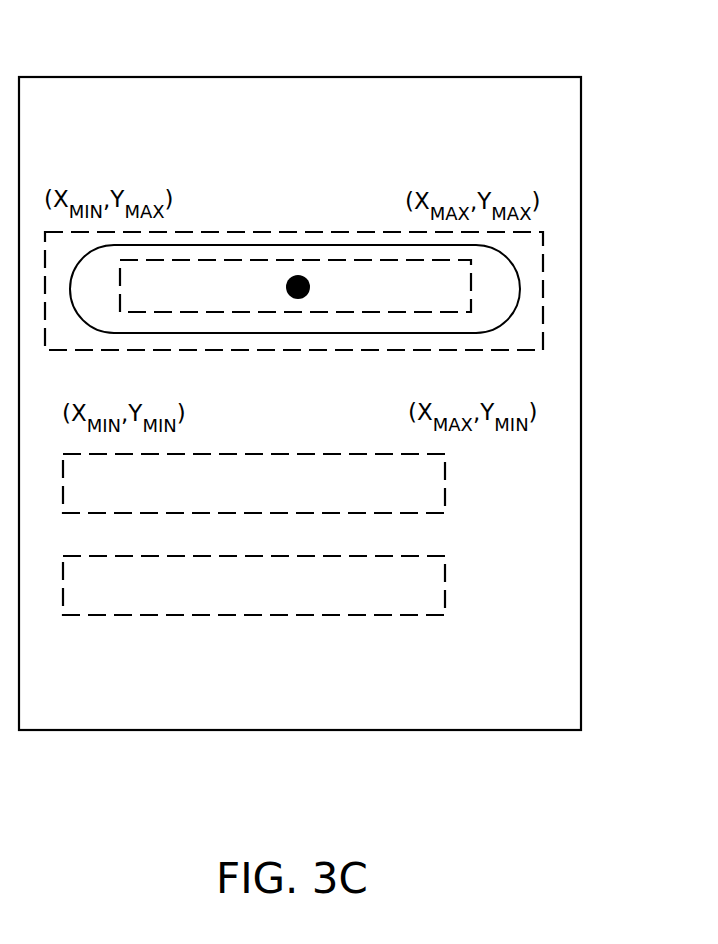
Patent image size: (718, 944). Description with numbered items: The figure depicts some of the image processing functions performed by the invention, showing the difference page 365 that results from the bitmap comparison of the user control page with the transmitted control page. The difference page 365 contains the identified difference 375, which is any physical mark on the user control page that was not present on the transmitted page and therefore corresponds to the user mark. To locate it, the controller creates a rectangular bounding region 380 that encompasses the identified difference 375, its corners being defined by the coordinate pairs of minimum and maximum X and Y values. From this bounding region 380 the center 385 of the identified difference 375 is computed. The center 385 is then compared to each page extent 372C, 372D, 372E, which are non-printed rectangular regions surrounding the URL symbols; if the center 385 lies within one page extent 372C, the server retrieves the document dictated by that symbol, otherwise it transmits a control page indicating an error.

The difference page 365 is at (300, 376).
The rectangular bounding region 380 is at (306, 312).
The identified difference 375 is at (364, 289).
The page extent 372C is at (396, 265).
The center 385 is at (364, 227).
The page extent 372D is at (318, 476).
The page extent 372E is at (318, 572).